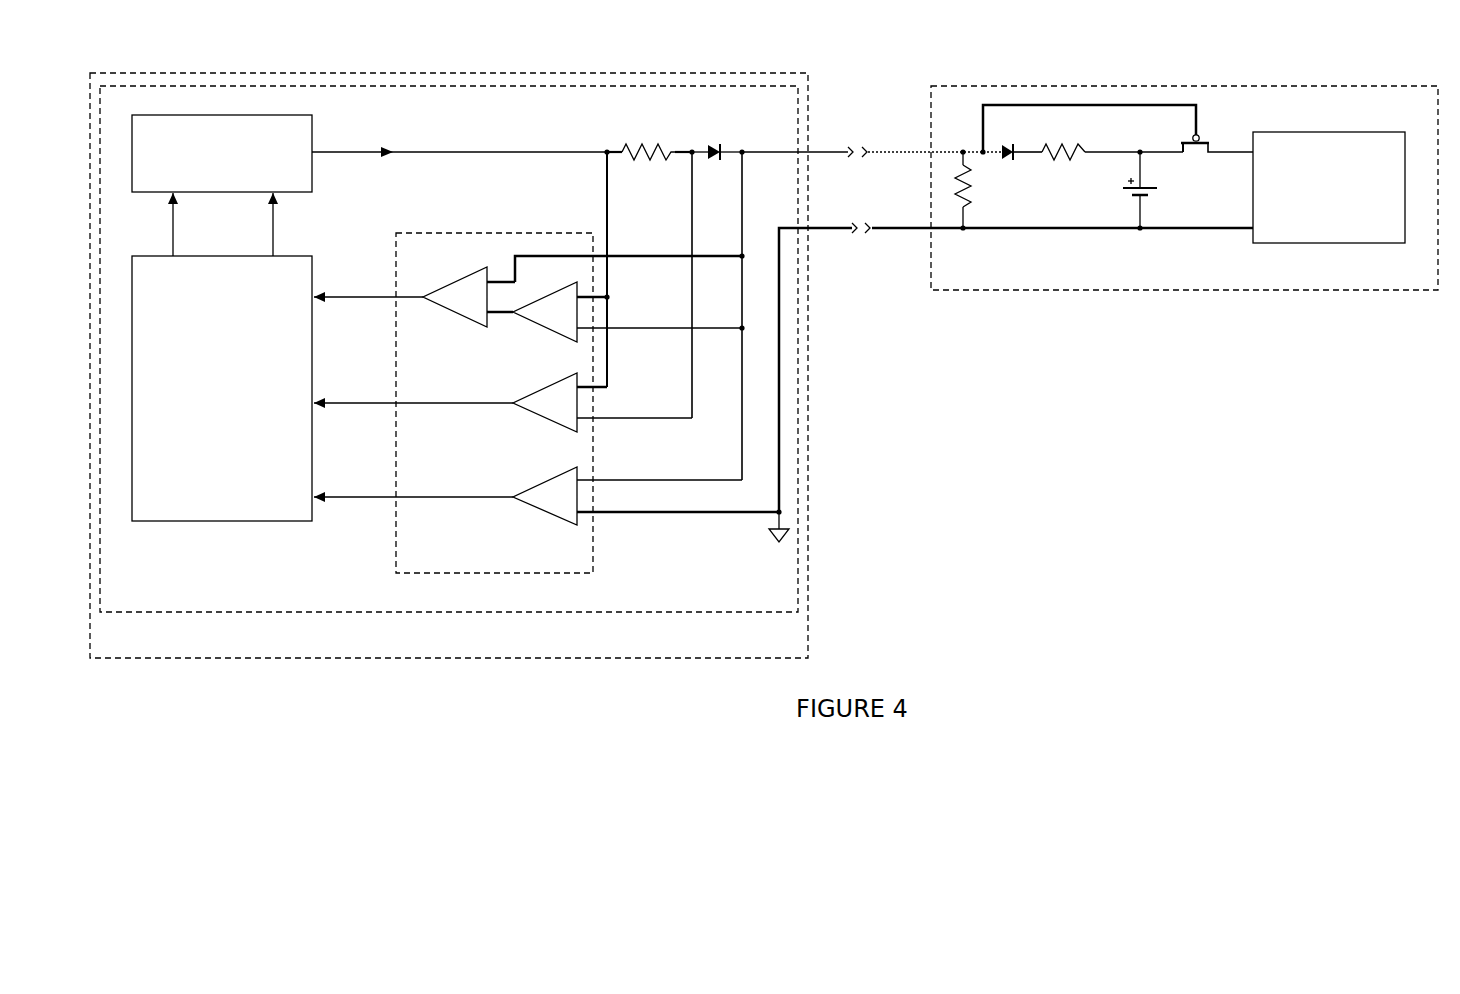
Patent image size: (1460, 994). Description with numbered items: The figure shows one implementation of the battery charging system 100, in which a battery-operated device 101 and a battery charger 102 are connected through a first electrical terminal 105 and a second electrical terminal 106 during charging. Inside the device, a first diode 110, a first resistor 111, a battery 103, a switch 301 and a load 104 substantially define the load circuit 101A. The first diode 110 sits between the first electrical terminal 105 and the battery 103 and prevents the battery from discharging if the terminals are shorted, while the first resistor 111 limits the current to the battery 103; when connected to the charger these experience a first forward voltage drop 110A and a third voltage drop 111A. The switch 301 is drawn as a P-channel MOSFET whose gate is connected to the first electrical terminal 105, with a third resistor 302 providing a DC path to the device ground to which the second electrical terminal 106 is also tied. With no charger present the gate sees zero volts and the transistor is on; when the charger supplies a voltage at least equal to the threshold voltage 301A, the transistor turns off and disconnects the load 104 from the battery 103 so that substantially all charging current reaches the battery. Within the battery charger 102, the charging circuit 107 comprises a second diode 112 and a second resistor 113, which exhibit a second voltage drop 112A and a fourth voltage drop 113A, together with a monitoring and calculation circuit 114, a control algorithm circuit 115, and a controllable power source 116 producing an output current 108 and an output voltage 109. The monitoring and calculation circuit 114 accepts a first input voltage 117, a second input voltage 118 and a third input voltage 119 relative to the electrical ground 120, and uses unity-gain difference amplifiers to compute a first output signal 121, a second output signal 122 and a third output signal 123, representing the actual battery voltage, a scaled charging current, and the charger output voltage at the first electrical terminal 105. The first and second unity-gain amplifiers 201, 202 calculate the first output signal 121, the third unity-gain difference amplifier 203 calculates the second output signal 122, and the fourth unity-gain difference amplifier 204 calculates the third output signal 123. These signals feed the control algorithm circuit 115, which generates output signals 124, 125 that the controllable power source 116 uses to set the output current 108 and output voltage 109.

The battery charging system 100 is at (1082, 443).
The battery-operated device 101 is at (1398, 292).
The load circuit 101A is at (1084, 233).
The battery charger 102 is at (808, 630).
The battery 103 is at (1162, 192).
The load 104 is at (1345, 131).
The first electrical terminal 105 is at (862, 141).
The second electrical terminal 106 is at (862, 219).
The charging circuit 107 is at (706, 541).
The output current 108 is at (393, 134).
The output voltage 109 is at (432, 155).
The first diode 110 is at (1014, 135).
The first forward voltage drop 110A is at (1011, 152).
The first resistor 111 is at (1083, 134).
The third voltage drop 111A is at (1112, 152).
The second diode 112 is at (717, 135).
The second voltage drop 112A is at (718, 152).
The second resistor 113 is at (638, 135).
The fourth voltage drop 113A is at (649, 152).
The monitoring and calculation circuit 114 is at (578, 575).
The control algorithm circuit 115 is at (248, 521).
The controllable power source 116 is at (314, 124).
The first input voltage 117 is at (608, 370).
The second input voltage 118 is at (608, 420).
The third input voltage 119 is at (612, 483).
The electrical ground 120 is at (612, 515).
The first output signal 121 is at (363, 296).
The second output signal 122 is at (363, 402).
The third output signal 123 is at (363, 496).
The output signal 124 is at (176, 236).
The output signal 125 is at (276, 236).
The first unity-gain amplifier 201 is at (455, 311).
The second unity-gain amplifier 202 is at (548, 328).
The third unity-gain difference amplifier 203 is at (548, 416).
The fourth unity-gain difference amplifier 204 is at (548, 508).
The switch 301 is at (1208, 140).
The threshold voltage 301A is at (1118, 128).
The third resistor 302 is at (980, 190).